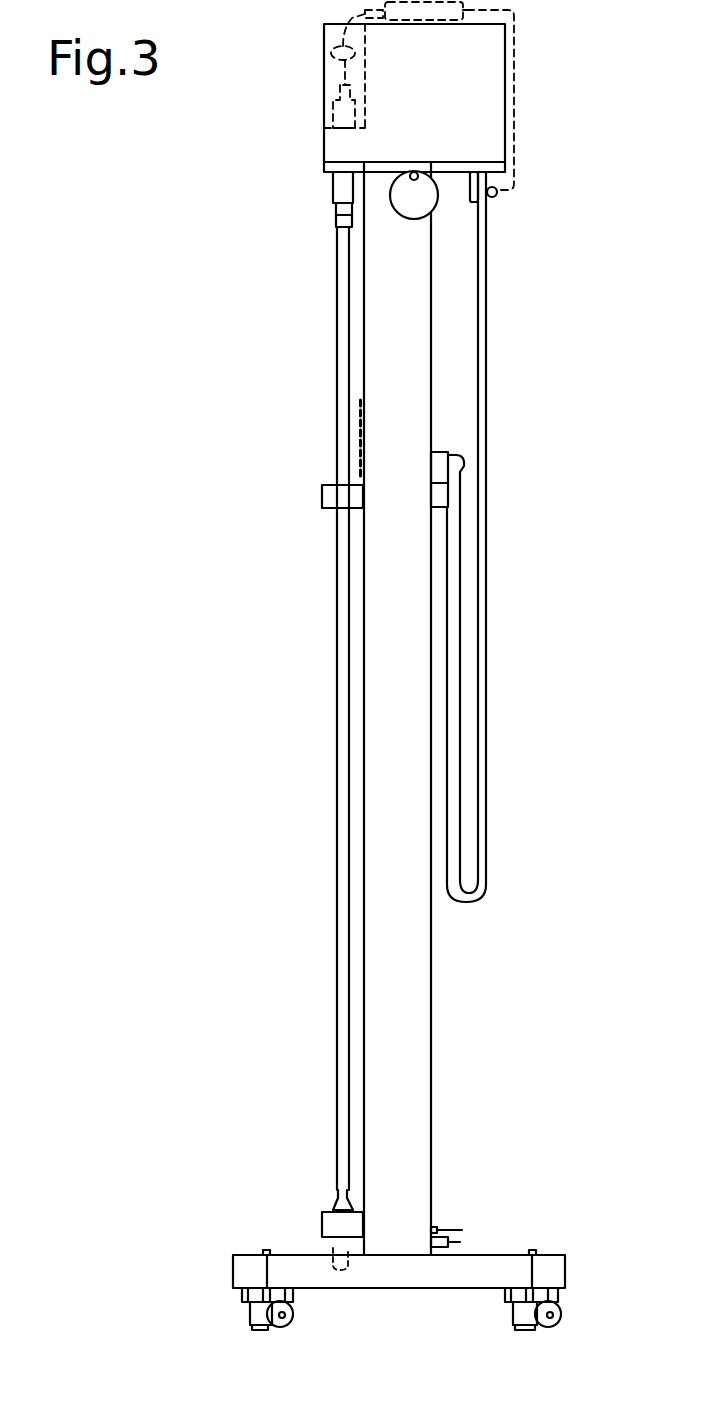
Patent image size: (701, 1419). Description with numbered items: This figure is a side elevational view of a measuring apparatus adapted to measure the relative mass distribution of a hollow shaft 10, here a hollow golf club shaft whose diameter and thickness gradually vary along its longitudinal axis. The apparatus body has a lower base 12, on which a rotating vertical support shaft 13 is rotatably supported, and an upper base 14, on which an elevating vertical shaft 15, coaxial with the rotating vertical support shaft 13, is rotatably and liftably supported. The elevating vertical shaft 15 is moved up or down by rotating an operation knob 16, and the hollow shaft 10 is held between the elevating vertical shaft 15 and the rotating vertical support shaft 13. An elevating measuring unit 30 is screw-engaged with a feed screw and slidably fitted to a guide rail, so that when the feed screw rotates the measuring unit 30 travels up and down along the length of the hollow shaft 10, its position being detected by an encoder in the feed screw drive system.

The hollow shaft 10 is at (341, 437).
The lower base 12 is at (438, 1280).
The rotating vertical support shaft 13 is at (335, 1200).
The upper base 14 is at (485, 128).
The elevating vertical shaft 15 is at (337, 212).
The operation knob 16 is at (430, 199).
The elevating measuring unit 30 is at (318, 488).